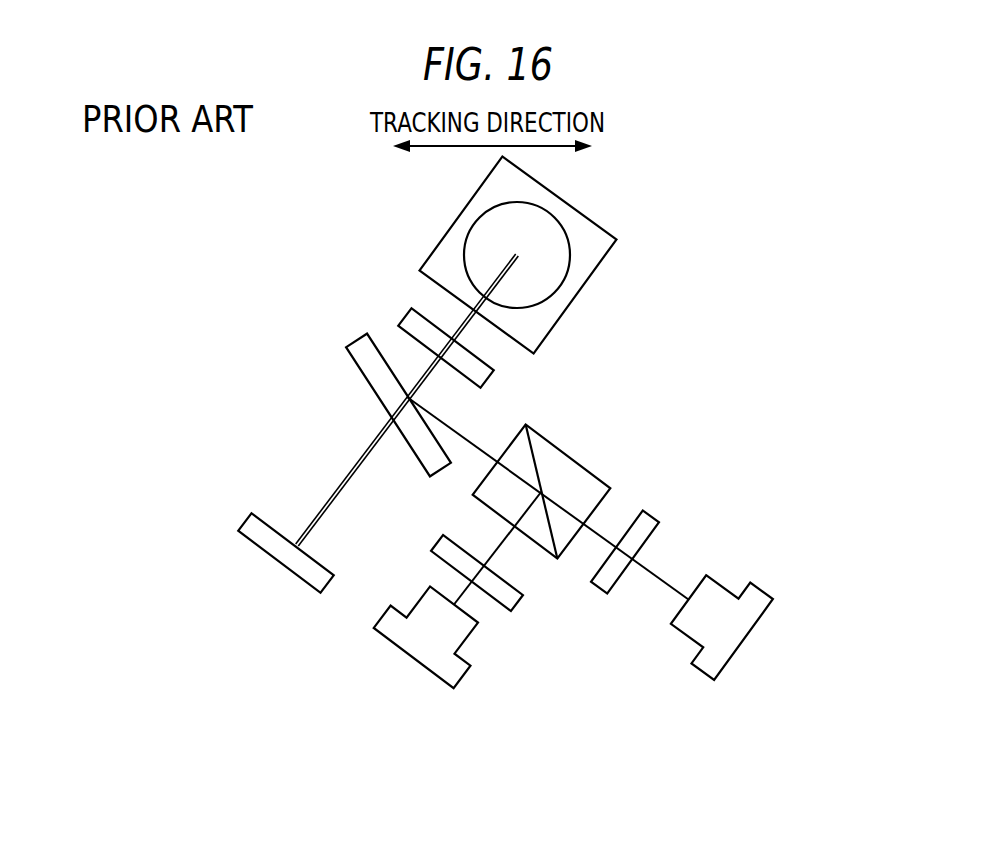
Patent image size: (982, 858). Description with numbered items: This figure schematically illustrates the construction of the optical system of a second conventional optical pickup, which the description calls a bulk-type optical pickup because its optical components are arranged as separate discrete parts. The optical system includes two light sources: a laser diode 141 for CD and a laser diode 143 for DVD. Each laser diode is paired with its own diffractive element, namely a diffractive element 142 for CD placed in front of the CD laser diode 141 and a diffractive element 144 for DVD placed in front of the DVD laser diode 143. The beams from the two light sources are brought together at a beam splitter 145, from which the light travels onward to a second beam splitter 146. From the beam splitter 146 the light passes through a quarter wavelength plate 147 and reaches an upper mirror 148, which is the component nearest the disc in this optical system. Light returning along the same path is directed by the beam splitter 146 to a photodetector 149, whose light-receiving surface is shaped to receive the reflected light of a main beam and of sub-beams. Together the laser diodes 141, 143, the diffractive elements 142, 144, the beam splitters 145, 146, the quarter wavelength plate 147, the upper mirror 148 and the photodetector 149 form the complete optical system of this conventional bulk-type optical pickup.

The laser diode for CD 141 is at (698, 672).
The diffractive element for CD 142 is at (655, 513).
The laser diode for DVD 143 is at (463, 674).
The diffractive element for DVD 144 is at (436, 542).
The beam splitter 145 is at (573, 458).
The beam splitter 146 is at (365, 376).
The quarter wavelength plate 147 is at (492, 372).
The upper mirror 148 is at (600, 266).
The photodetector 149 is at (252, 512).